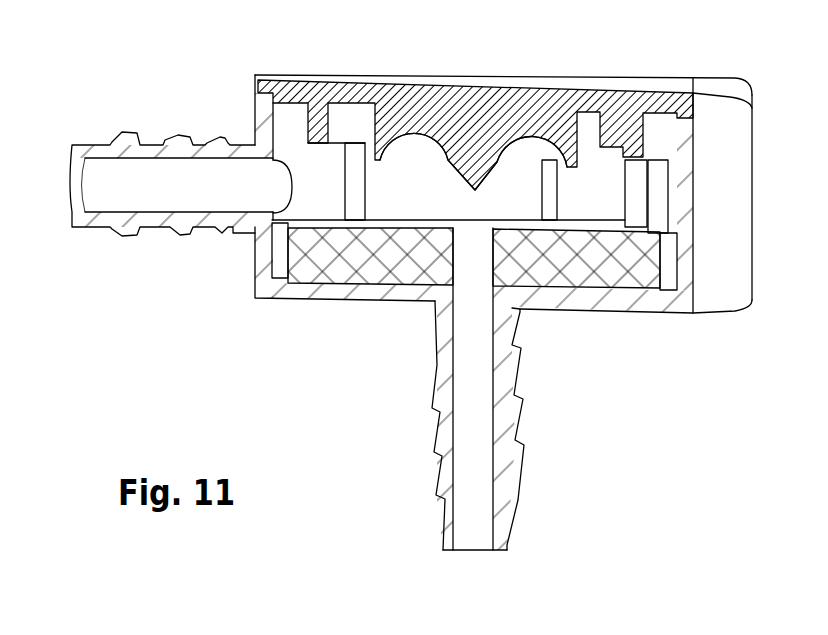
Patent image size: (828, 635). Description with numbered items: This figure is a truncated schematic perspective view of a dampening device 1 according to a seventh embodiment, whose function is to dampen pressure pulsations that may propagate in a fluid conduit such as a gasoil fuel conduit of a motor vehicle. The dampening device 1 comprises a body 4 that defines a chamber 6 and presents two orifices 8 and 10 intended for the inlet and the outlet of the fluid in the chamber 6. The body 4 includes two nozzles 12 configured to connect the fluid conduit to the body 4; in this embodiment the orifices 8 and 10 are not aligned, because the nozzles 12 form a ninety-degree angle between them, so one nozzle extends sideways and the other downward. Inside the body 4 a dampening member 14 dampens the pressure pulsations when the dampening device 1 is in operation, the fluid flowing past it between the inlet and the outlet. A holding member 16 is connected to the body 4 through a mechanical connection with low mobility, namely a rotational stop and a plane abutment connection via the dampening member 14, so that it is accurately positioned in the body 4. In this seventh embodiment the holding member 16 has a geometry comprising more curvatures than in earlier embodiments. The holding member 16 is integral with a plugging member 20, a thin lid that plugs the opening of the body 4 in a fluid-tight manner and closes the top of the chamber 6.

The dampening device 1 is at (92, 104).
The body 4 is at (635, 295).
The chamber 6 is at (322, 174).
The orifice 8 is at (272, 182).
The orifice 10 is at (477, 300).
The nozzle 12 is at (155, 147).
The dampening member 14 is at (333, 258).
The holding member 16 is at (472, 160).
The plugging member 20 is at (643, 107).